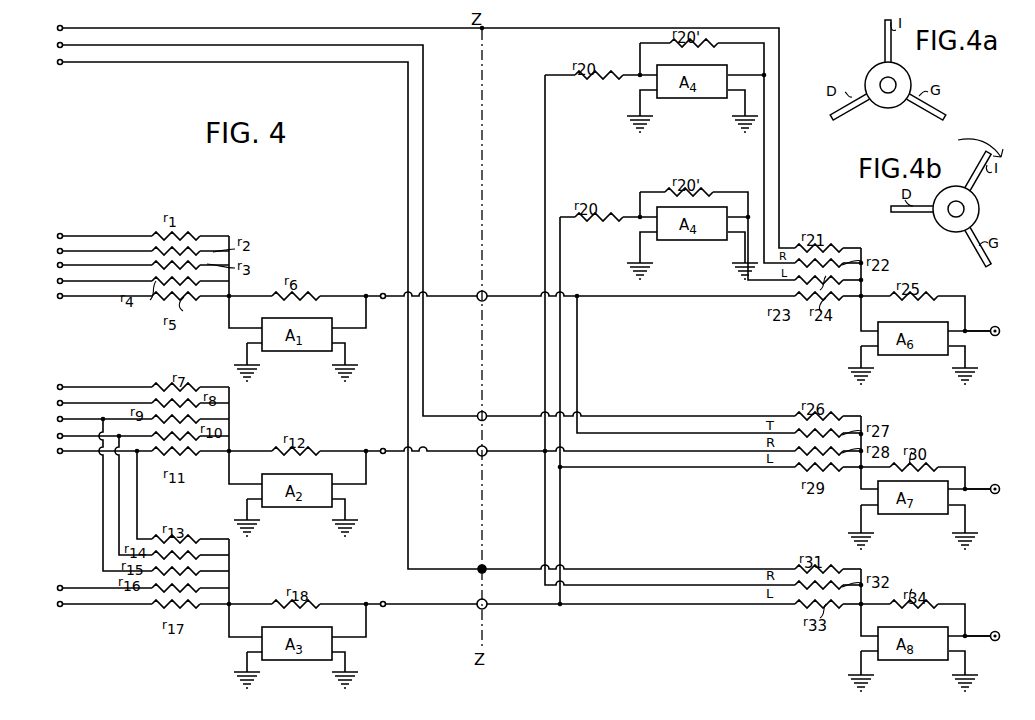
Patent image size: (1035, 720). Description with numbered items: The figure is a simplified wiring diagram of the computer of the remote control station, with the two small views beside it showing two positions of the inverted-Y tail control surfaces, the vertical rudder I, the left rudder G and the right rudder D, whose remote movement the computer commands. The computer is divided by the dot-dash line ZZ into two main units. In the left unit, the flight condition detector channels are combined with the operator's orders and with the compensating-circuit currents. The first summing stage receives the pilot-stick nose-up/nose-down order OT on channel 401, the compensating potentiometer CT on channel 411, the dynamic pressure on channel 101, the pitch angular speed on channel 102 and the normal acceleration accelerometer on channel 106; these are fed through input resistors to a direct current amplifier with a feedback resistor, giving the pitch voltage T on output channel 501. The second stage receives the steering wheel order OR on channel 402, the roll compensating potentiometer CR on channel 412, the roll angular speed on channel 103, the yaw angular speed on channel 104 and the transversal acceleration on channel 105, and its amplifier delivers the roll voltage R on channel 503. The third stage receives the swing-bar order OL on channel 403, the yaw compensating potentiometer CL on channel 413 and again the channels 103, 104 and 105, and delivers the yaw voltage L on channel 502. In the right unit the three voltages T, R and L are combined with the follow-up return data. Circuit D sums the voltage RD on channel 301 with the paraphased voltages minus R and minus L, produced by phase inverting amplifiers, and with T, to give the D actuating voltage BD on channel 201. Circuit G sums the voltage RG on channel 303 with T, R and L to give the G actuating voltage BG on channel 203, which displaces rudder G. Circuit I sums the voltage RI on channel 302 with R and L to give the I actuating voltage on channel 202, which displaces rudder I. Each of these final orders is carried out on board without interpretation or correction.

The channel carrying voltage RD 301 is at (414, 128).
The channel carrying voltage RI 302 is at (408, 308).
The channel carrying voltage RG 303 is at (408, 223).
The pilot-stick potentiometer channel OT 401 is at (127, 230).
The compensating potentiometer channel CT 411 is at (127, 247).
The dynamic pressure channel PΔ 101 is at (127, 262).
The pitch angular speed channel ωT 102 is at (127, 277).
The normal acceleration accelerometer channel ΓN 106 is at (149, 293).
The pilot stick steering wheel potentiometer channel OR 402 is at (127, 381).
The roll compensating potentiometer channel CR 412 is at (127, 399).
The roll angular speed channel ωR 103 is at (127, 415).
The yaw angular speed channel ωL 104 is at (127, 432).
The transversal acceleration channel ΓT 105 is at (149, 447).
The steering swing-bar potentiometer channel OL 403 is at (129, 583).
The yaw compensating potentiometer channel CL 413 is at (151, 610).
The pitch voltage T output channel 501 is at (583, 297).
The roll voltage R output channel 503 is at (582, 454).
The yaw voltage L output channel 502 is at (587, 608).
The D actuating voltage BD channel 201 is at (986, 334).
The G actuating voltage BG channel 203 is at (986, 491).
The I actuating voltage channel 202 is at (986, 637).